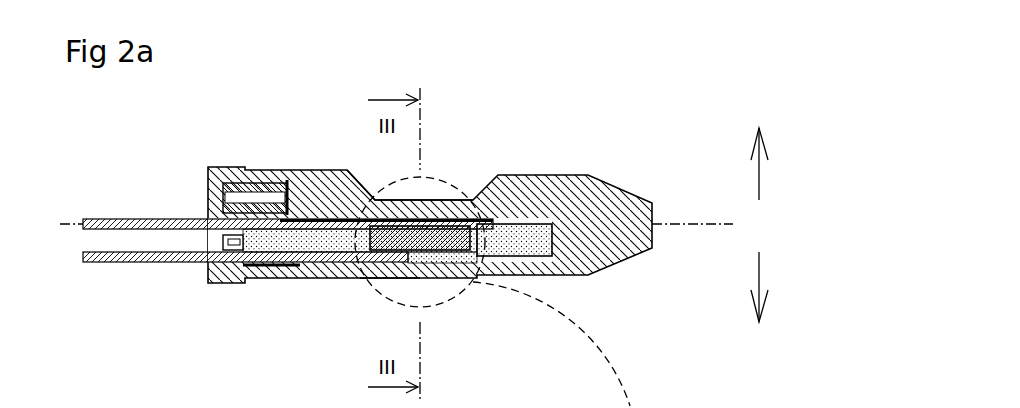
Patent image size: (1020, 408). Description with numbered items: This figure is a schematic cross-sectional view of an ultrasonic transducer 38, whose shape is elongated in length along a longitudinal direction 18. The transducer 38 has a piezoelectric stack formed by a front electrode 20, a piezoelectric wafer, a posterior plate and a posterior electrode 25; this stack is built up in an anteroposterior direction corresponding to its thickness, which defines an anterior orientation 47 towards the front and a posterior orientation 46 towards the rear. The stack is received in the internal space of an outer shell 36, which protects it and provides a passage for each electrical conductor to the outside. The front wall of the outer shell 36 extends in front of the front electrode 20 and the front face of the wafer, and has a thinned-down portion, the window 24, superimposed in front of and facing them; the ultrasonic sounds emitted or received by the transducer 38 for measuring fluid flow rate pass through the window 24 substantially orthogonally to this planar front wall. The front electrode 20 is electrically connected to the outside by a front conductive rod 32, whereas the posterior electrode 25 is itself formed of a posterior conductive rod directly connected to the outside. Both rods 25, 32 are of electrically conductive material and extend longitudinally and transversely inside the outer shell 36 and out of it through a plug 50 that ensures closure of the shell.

The longitudinal direction 18 is at (700, 225).
The front electrode 20 is at (315, 217).
The window 24 is at (382, 288).
The posterior electrode 25 is at (118, 262).
The front conductive rod 32 is at (122, 219).
The outer shell 36 is at (513, 276).
The ultrasonic transducer 38 is at (352, 134).
The posterior orientation 46 is at (759, 173).
The anterior orientation 47 is at (759, 275).
The plug 50 is at (208, 193).